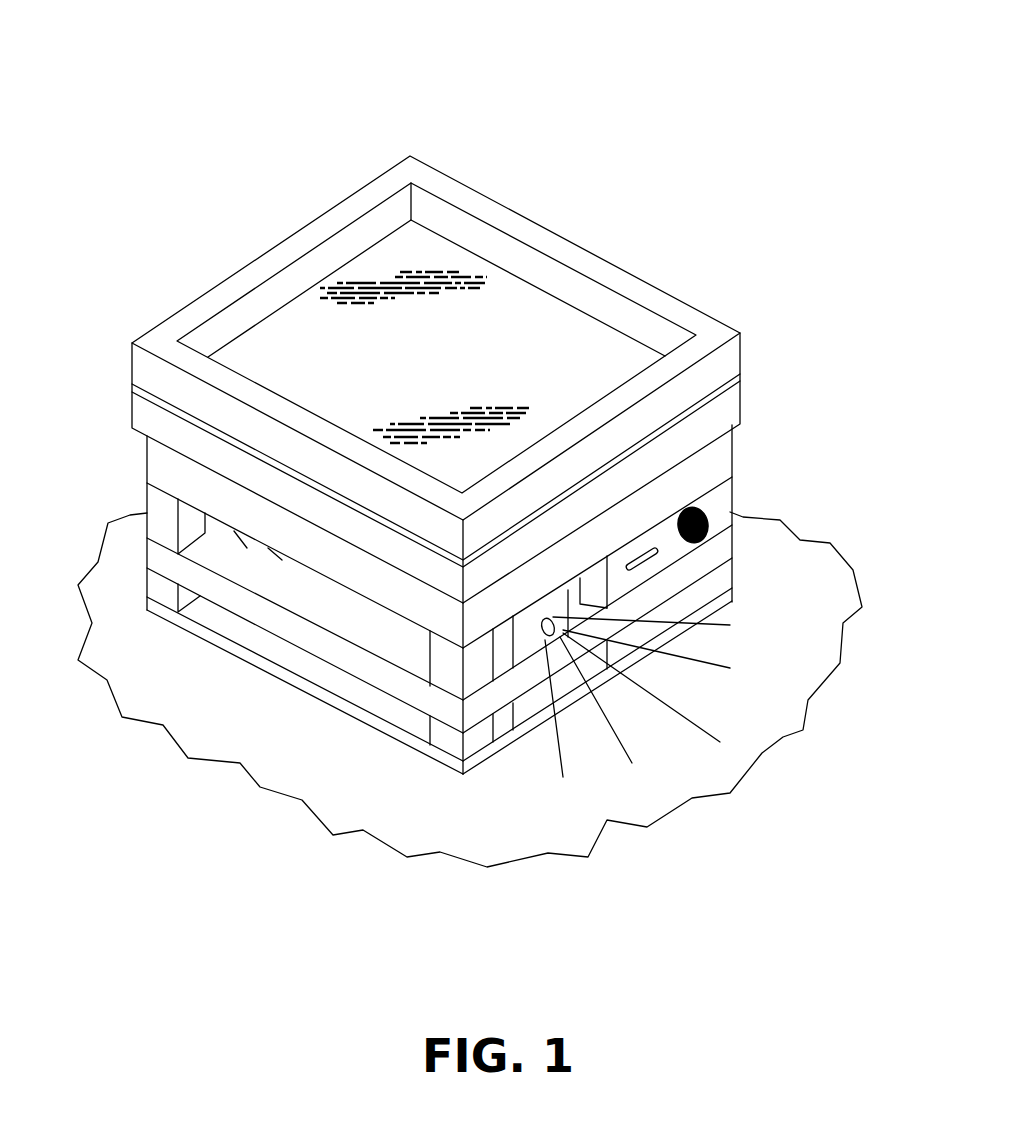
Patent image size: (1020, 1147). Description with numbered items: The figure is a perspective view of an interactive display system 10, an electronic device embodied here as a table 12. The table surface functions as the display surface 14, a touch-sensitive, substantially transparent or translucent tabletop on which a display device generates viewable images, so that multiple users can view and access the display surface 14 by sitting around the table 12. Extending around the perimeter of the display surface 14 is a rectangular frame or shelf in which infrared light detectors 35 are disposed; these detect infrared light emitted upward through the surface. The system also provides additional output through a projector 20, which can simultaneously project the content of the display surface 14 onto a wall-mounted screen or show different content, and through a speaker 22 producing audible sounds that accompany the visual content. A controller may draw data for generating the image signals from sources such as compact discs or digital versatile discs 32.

The interactive display system 10 is at (784, 116).
The table 12 is at (135, 476).
The display surface 14 is at (553, 317).
The infrared light detectors 35 is at (714, 317).
The projector 20 is at (528, 680).
The speaker 22 is at (714, 504).
The compact discs or digital versatile discs 32 is at (655, 571).